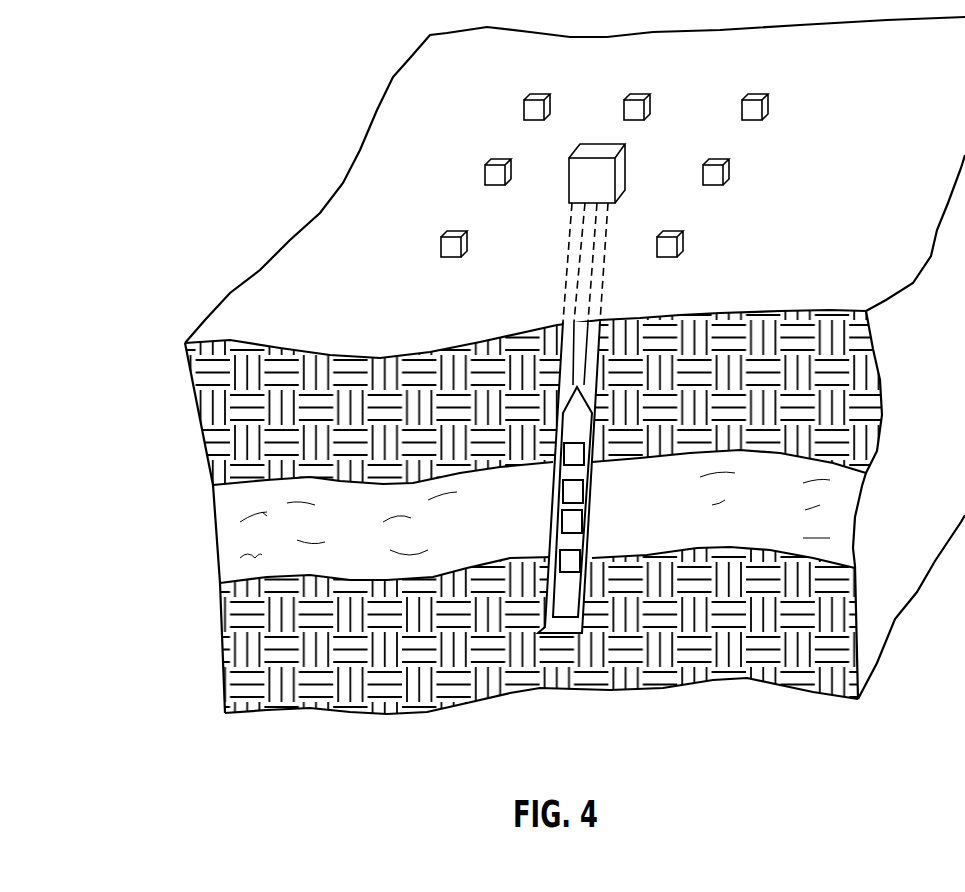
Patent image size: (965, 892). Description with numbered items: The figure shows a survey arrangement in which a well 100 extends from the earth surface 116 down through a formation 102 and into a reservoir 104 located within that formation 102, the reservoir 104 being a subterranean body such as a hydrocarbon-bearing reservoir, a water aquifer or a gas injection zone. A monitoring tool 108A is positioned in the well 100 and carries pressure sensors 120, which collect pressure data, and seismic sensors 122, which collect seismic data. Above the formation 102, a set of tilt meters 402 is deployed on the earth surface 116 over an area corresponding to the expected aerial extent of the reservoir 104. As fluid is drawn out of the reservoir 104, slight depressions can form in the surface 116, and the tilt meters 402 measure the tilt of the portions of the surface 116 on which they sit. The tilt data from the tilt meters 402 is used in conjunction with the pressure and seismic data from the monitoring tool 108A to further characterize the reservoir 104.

The well 100 is at (597, 348).
The formation 102 is at (797, 387).
The reservoir 104 is at (778, 497).
The monitoring tool 108A is at (578, 595).
The earth surface 116 is at (841, 199).
The pressure sensors 120 is at (584, 457).
The seismic sensors 122 is at (583, 523).
The tilt meters 402 is at (455, 233).